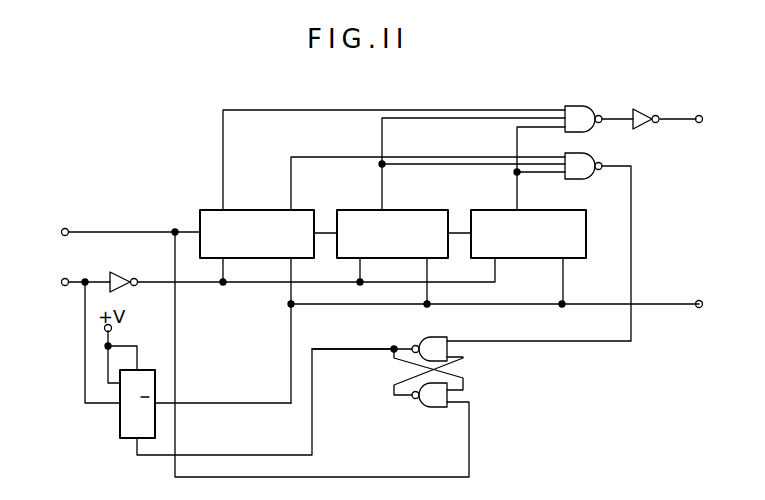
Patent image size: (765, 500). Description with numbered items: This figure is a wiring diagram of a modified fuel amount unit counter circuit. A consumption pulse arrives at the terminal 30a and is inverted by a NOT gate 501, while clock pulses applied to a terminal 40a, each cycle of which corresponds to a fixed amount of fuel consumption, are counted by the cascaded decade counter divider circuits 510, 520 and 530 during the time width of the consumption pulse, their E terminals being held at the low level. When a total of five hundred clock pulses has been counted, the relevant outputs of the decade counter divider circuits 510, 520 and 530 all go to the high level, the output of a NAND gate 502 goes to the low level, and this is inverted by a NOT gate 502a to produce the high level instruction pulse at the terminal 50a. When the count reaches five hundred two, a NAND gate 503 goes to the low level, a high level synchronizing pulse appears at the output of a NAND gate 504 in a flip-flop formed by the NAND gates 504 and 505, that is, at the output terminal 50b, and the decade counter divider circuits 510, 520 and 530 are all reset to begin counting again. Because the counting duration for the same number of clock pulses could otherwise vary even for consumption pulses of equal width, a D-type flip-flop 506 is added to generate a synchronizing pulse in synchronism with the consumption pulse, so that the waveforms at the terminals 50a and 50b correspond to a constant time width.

The terminal 40a is at (64, 228).
The terminal 30a is at (61, 282).
The NOT gate 501 is at (126, 264).
The D-type flip-flop 506 is at (120, 424).
The decade counter divider circuit 510 is at (279, 210).
The decade counter divider circuit 520 is at (421, 210).
The decade counter divider circuit 530 is at (541, 210).
The NAND gate 502 is at (580, 106).
The NAND gate 503 is at (586, 172).
The NOT gate 502a is at (645, 109).
The terminal 50a is at (702, 122).
The output terminal 50b is at (706, 291).
The NAND gate 504 is at (446, 338).
The NAND gate 505 is at (452, 395).